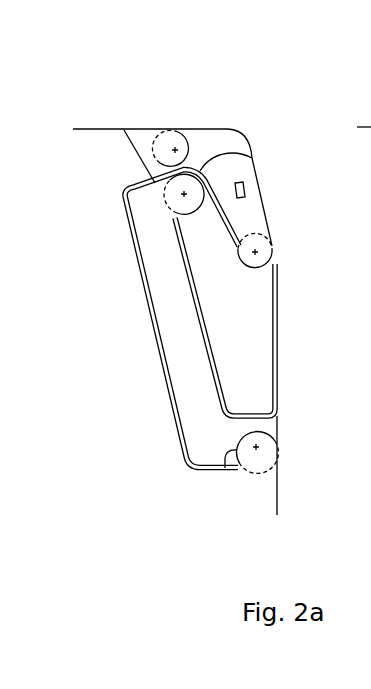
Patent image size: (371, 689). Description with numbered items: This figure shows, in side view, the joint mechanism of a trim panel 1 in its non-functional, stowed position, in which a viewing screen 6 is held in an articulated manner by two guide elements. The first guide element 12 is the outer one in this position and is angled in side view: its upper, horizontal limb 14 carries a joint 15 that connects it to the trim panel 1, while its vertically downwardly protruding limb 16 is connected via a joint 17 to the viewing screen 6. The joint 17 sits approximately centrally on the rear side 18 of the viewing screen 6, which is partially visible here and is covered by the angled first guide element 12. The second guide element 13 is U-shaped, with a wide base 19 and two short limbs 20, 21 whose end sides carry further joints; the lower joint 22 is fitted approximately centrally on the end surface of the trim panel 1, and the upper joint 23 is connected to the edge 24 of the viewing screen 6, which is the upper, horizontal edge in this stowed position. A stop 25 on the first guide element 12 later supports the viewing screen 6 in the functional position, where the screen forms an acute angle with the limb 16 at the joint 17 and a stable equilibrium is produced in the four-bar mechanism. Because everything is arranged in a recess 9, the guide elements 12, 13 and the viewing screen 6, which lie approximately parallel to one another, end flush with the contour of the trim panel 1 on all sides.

The trim panel 1 is at (93, 137).
The viewing screen 6 is at (266, 378).
The recess 9 is at (133, 268).
The first guide element 12 is at (240, 140).
The second guide element 13 is at (166, 372).
The upper horizontal limb 14 is at (208, 128).
The joint 15 is at (170, 127).
The vertically downwardly protruding limb 16 is at (252, 209).
The joint 17 is at (272, 245).
The rear side 18 is at (278, 316).
The base 19 is at (178, 318).
The short limb 20 is at (226, 470).
The short limb 21 is at (124, 130).
The lower joint 22 is at (271, 439).
The upper joint 23 is at (168, 200).
The edge 24 is at (253, 157).
The stop 25 is at (246, 190).